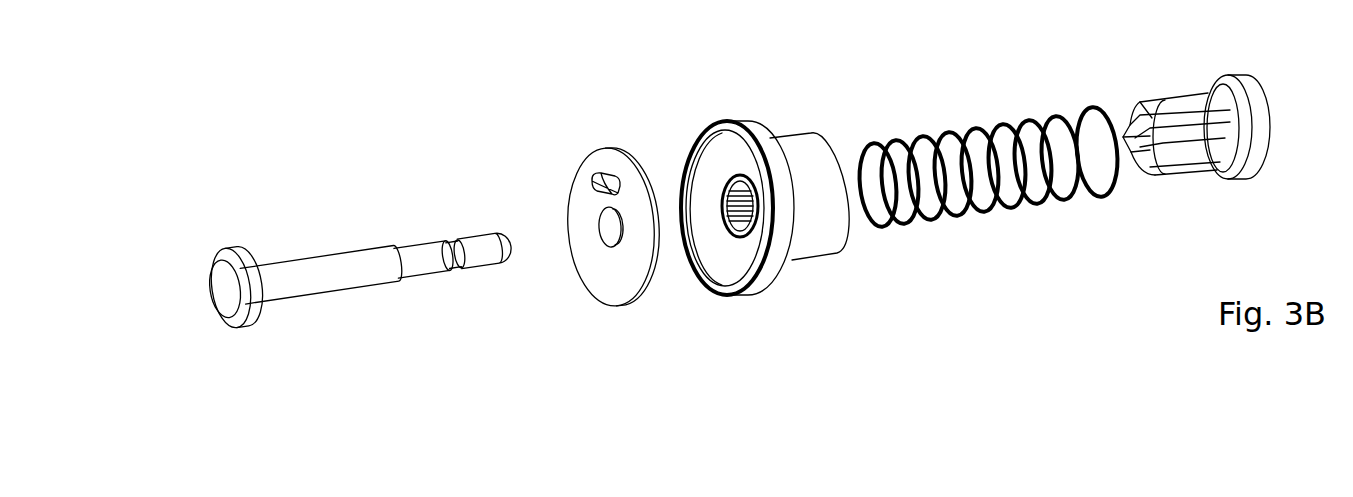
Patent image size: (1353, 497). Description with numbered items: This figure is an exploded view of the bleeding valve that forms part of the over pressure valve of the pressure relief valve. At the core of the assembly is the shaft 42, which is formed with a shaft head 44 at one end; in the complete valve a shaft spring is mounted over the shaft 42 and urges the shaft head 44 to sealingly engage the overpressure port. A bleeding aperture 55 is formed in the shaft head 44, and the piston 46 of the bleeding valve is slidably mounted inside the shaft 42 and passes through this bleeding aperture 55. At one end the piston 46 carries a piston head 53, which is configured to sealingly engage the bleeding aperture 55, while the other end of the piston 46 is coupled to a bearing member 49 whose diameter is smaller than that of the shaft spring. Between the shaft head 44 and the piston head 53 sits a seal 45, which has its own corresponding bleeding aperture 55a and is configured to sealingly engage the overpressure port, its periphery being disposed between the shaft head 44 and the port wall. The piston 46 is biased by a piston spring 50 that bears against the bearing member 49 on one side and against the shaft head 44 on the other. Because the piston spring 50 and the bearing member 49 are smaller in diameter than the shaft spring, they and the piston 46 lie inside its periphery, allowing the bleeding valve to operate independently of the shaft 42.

The shaft 42 is at (763, 177).
The shaft head 44 is at (745, 128).
The seal 45 is at (622, 227).
The piston 46 is at (375, 267).
The bearing member 49 is at (1163, 100).
The piston spring 50 is at (985, 210).
The piston head 53 is at (224, 288).
The bleeding aperture 55 is at (722, 192).
The bleeding aperture 55a is at (602, 176).